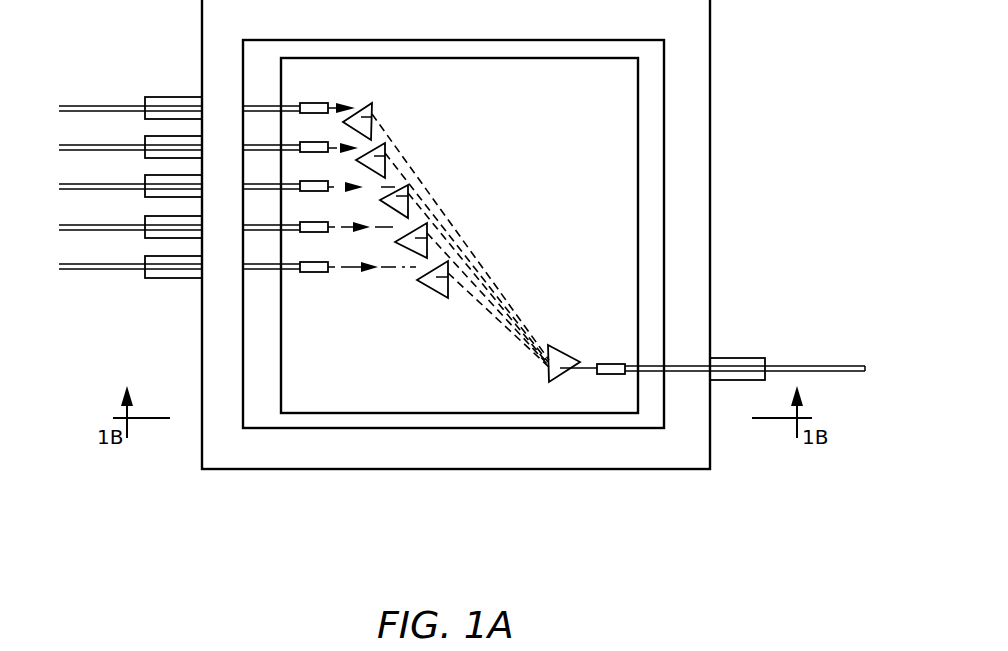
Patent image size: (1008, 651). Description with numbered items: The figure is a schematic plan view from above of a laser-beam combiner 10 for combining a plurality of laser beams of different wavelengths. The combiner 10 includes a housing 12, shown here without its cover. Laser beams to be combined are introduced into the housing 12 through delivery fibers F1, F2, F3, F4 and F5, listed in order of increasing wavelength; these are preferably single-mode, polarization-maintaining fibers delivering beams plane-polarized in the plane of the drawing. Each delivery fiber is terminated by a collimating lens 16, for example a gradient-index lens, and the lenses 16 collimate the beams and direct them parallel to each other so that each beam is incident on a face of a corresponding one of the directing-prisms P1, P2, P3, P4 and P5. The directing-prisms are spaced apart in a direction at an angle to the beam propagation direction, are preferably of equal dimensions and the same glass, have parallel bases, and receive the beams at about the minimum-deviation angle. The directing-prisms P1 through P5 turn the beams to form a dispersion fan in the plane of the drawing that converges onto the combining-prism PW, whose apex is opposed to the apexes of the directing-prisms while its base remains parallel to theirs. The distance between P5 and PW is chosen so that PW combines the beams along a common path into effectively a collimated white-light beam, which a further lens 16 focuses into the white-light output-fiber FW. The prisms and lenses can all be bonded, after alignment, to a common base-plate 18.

The laser-beam combiner 10 is at (210, 538).
The housing 12 is at (560, 476).
The collimating lens 16 is at (315, 102).
The common base-plate 18 is at (635, 143).
The delivery fiber F1 is at (127, 106).
The delivery fiber F2 is at (115, 145).
The delivery fiber F3 is at (133, 189).
The delivery fiber F4 is at (108, 230).
The delivery fiber F5 is at (80, 270).
The white-light output-fiber FW is at (783, 366).
The directing-prism P1 is at (373, 117).
The directing-prism P2 is at (386, 160).
The directing-prism P3 is at (409, 202).
The directing-prism P4 is at (428, 240).
The directing-prism P5 is at (440, 292).
The combining-prism PW is at (557, 343).